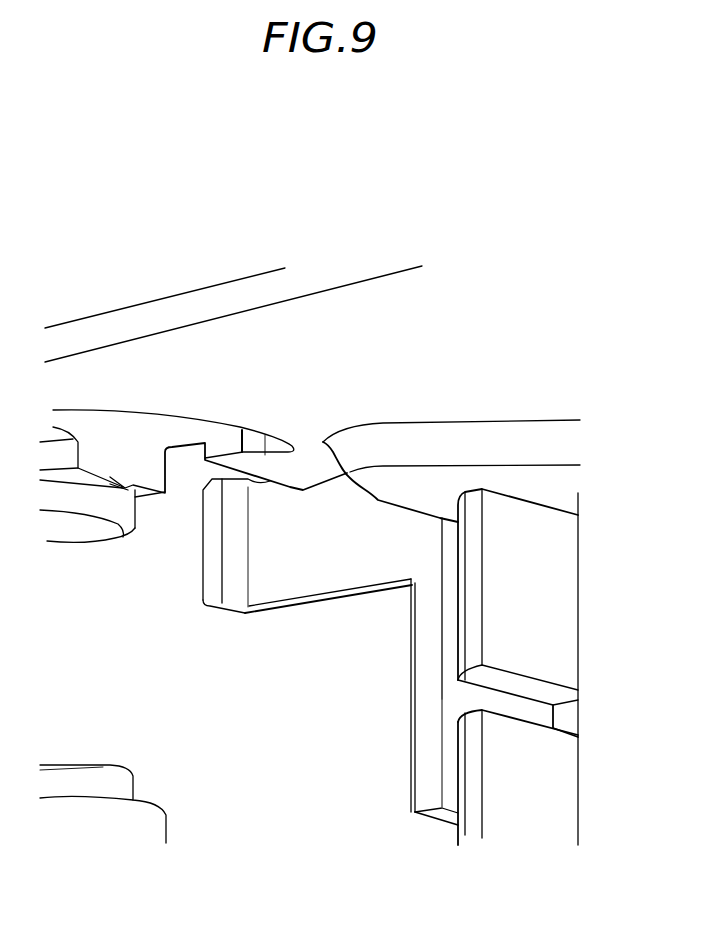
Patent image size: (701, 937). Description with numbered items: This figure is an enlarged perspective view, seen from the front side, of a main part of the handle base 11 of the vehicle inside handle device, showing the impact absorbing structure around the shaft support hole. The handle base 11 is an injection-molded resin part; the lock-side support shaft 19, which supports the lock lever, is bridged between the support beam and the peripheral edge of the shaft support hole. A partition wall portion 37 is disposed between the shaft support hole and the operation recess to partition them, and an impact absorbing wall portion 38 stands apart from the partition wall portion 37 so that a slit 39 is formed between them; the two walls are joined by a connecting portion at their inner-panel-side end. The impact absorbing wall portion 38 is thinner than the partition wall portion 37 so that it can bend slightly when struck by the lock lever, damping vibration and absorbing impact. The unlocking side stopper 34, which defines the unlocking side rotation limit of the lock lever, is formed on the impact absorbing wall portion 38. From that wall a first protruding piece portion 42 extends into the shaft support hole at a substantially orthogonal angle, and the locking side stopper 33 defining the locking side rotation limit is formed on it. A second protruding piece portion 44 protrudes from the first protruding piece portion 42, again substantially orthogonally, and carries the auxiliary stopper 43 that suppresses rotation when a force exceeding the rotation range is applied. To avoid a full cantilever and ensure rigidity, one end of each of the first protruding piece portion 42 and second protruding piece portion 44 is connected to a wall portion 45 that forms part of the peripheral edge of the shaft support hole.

The handle base 11 is at (546, 369).
The lock-side support shaft 19 is at (78, 533).
The wall portion 45 is at (178, 497).
The auxiliary stopper 43 is at (237, 576).
The second protruding piece portion 44 is at (237, 592).
The locking side stopper 33 is at (330, 695).
The first protruding piece portion 42 is at (285, 590).
The unlocking side stopper 34 is at (402, 671).
The impact absorbing wall portion 38 is at (425, 606).
The slit 39 is at (455, 736).
The partition wall portion 37 is at (520, 533).